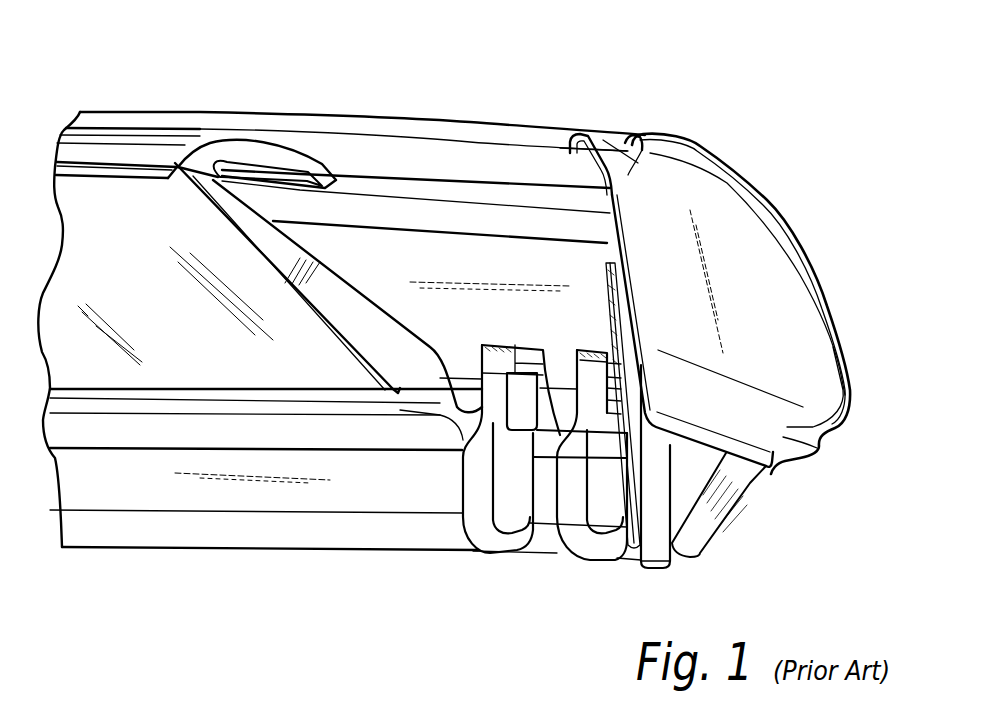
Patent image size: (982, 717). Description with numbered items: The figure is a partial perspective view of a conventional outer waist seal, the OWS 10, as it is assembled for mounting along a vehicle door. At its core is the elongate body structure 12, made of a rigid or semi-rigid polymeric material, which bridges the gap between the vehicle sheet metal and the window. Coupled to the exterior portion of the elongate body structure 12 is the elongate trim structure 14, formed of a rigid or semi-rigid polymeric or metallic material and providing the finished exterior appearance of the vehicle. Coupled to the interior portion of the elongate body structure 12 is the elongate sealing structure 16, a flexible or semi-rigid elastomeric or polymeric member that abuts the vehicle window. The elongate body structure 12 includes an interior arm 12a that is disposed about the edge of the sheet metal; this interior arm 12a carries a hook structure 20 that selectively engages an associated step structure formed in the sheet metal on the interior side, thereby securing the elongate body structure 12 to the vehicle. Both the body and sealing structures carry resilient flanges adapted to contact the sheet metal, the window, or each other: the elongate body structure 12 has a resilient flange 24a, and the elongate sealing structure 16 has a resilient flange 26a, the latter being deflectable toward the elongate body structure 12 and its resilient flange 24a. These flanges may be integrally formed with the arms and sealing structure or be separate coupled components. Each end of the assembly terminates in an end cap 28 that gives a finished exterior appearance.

The OWS 10 is at (539, 86).
The elongate body structure 12 is at (497, 312).
The interior arm 12a is at (568, 400).
The elongate trim structure 14 is at (733, 165).
The elongate sealing structure 16 is at (296, 313).
The hook structure 20 is at (593, 552).
The resilient flange 24a is at (602, 135).
The resilient flange 26a is at (300, 148).
The end cap 28 is at (813, 273).